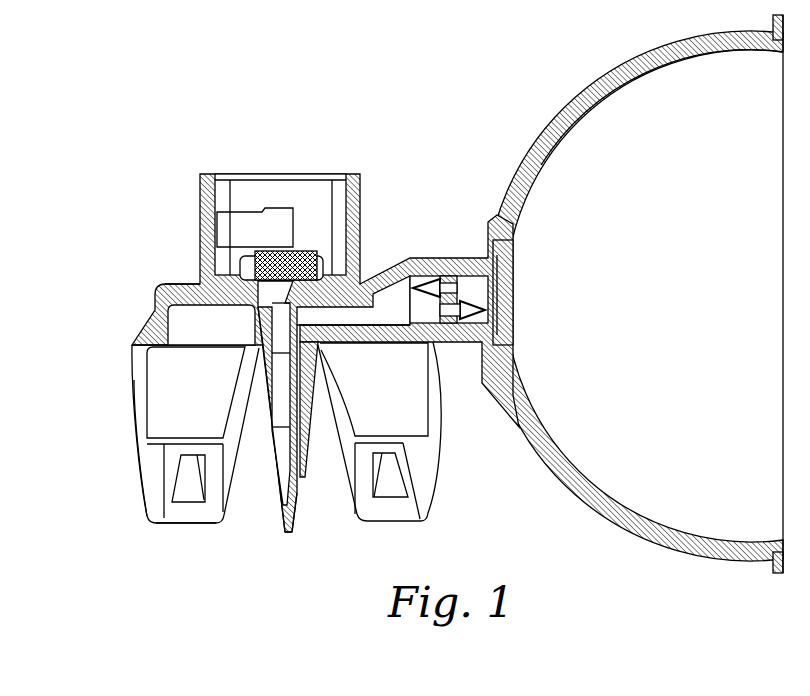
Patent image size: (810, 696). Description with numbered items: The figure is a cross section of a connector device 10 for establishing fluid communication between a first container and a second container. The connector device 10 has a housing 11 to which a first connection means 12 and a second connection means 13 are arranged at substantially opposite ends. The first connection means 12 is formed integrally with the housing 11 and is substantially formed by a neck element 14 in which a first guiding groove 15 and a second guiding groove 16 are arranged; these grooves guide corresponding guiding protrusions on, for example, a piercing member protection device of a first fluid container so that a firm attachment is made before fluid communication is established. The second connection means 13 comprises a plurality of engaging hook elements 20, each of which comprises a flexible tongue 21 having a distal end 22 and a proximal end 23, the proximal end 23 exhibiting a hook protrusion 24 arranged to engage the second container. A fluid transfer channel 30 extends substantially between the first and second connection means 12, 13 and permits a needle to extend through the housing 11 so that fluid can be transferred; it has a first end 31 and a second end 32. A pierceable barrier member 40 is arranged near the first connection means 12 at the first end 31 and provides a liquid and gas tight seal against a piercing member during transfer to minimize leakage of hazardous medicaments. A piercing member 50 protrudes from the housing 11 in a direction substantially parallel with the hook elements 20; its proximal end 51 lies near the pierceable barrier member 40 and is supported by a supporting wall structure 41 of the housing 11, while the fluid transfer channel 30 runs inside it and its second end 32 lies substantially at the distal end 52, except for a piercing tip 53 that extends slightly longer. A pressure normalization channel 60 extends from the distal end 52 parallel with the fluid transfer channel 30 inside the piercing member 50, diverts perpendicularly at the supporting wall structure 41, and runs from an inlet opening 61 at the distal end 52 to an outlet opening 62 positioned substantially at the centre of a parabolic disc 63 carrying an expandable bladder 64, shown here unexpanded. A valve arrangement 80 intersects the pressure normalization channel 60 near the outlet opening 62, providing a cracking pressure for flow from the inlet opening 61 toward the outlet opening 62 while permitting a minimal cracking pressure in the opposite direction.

The connector device 10 is at (127, 213).
The housing 11 is at (178, 283).
The first connection means 12 is at (292, 186).
The second connection means 13 is at (138, 482).
The neck element 14 is at (242, 175).
The first guiding groove 15 is at (265, 243).
The second guiding groove 16 is at (340, 222).
The engaging hook element 20 is at (295, 460).
The flexible tongue 21 is at (134, 410).
The distal end 22 is at (127, 349).
The proximal end 23 is at (176, 527).
The hook protrusion 24 is at (196, 447).
The fluid transfer channel 30 is at (272, 443).
The first end 31 is at (276, 303).
The second end 32 is at (280, 470).
The pierceable barrier member 40 is at (303, 251).
The supporting wall structure 41 is at (215, 288).
The piercing member 50 is at (312, 445).
The proximal end 51 is at (262, 362).
The distal end 52 is at (284, 507).
The piercing tip 53 is at (291, 533).
The pressure normalization channel 60 is at (340, 312).
The inlet opening 61 is at (300, 480).
The outlet opening 62 is at (514, 238).
The parabolic disc 63 is at (537, 140).
The expandable bladder 64 is at (543, 164).
The valve arrangement 80 is at (450, 266).